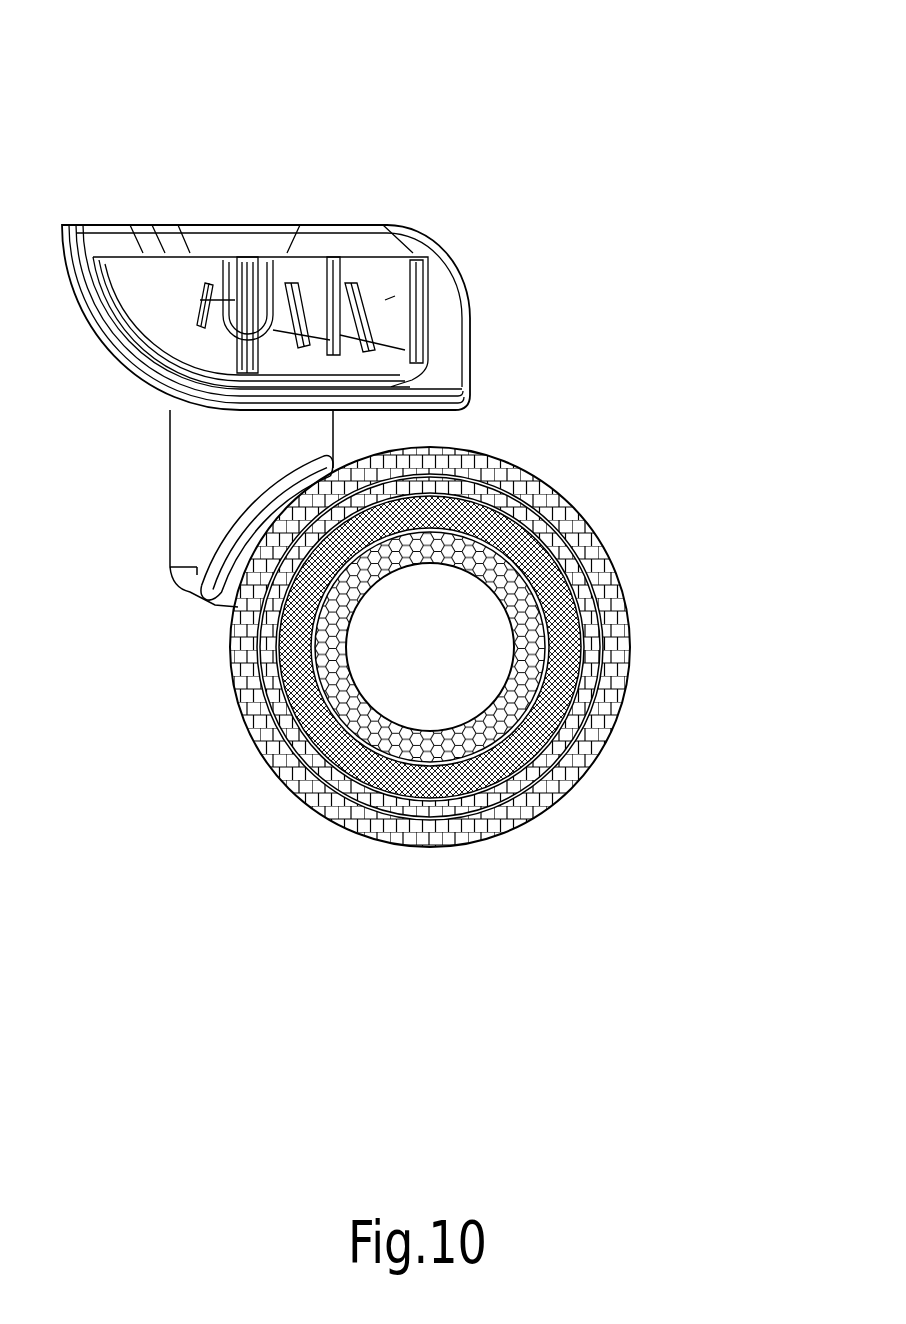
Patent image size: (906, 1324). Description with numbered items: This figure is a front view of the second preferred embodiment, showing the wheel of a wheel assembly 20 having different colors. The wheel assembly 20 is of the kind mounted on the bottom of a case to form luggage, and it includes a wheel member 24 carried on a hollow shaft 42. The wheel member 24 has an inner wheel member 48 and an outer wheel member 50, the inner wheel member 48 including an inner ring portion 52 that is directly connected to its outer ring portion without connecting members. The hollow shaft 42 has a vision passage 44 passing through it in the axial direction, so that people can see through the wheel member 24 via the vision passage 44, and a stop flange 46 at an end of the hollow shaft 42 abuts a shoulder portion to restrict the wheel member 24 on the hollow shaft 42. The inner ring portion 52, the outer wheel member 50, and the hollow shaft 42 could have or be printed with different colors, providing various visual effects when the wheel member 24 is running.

The wheel assembly 20 is at (364, 212).
The wheel member 24 is at (528, 462).
The hollow shaft 42 is at (345, 642).
The vision passage 44 is at (448, 646).
The stop flange 46 is at (547, 710).
The inner wheel member 48 is at (513, 793).
The outer wheel member 50 is at (273, 767).
The inner ring portion 52 is at (585, 637).